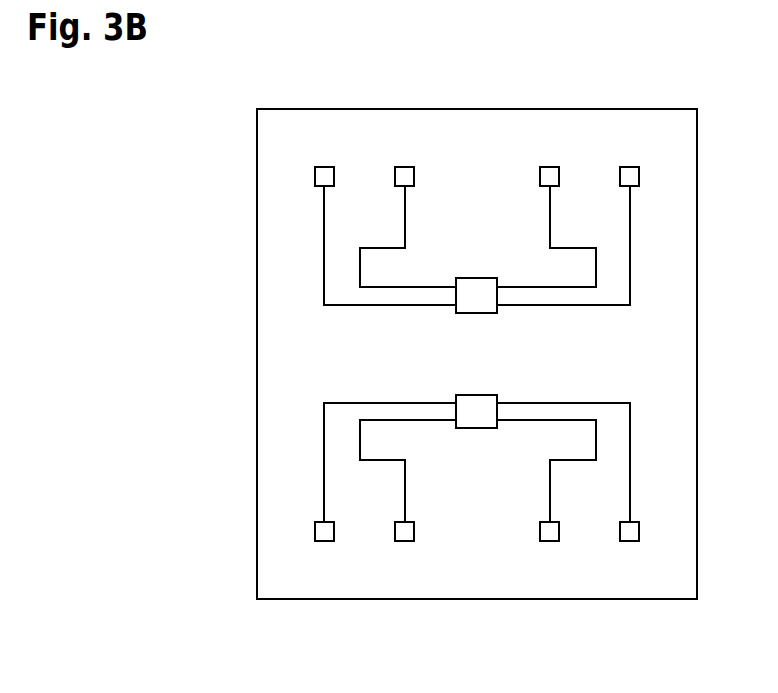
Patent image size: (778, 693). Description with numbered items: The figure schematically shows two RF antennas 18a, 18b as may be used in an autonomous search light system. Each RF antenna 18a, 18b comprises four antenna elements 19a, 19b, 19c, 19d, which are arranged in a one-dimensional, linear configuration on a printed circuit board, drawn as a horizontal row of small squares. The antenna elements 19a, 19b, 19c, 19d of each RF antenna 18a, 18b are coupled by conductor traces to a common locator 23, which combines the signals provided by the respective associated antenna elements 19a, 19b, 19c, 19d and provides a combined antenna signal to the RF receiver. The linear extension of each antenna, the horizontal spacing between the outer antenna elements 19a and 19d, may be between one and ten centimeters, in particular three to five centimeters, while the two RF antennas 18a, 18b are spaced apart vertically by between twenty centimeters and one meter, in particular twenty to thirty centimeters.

The RF antenna 18a is at (300, 280).
The RF antenna 18b is at (375, 570).
The antenna element 19a is at (328, 155).
The antenna element 19b is at (407, 155).
The antenna element 19c is at (553, 155).
The antenna element 19d is at (633, 155).
The locator 23 is at (477, 272).